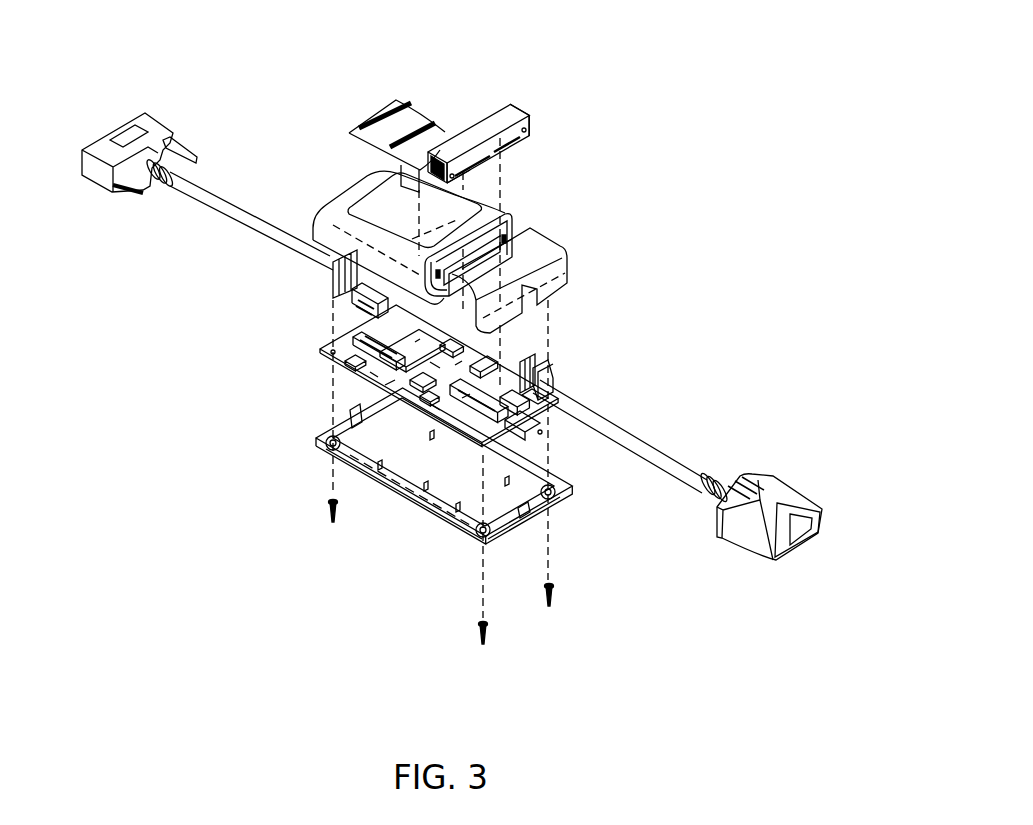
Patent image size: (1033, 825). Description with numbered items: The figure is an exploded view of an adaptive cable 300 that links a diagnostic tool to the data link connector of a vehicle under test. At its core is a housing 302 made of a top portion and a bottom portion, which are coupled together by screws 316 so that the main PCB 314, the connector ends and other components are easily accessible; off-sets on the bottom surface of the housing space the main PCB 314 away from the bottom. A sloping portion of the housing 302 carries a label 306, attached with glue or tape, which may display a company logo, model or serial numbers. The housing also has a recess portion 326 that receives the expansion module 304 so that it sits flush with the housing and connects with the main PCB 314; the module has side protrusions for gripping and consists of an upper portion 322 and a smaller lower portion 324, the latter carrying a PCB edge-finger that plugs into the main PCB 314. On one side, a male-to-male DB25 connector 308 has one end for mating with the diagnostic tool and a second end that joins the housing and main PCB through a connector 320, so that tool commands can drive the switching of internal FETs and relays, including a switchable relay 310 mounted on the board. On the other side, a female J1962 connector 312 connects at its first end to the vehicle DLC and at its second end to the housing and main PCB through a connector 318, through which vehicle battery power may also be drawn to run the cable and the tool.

The adaptive cable 300 is at (683, 50).
The housing 302 is at (540, 230).
The expansion module 304 is at (470, 110).
The label 306 is at (378, 115).
The DB25 connector 308 is at (196, 202).
The switchable relay 310 is at (525, 432).
The J1962 connector 312 is at (693, 468).
The main PCB 314 is at (322, 352).
The screws 316 is at (480, 630).
The connector 318 is at (540, 352).
The connector 320 is at (340, 302).
The upper portion 322 is at (528, 104).
The lower portion 324 is at (505, 165).
The recess portion 326 is at (503, 228).